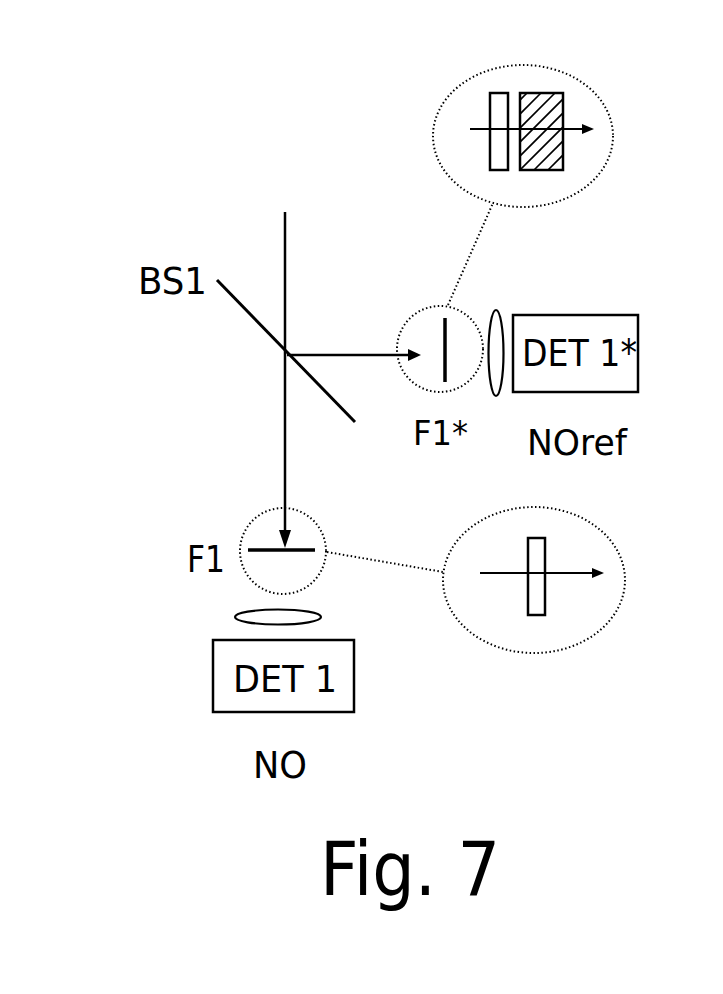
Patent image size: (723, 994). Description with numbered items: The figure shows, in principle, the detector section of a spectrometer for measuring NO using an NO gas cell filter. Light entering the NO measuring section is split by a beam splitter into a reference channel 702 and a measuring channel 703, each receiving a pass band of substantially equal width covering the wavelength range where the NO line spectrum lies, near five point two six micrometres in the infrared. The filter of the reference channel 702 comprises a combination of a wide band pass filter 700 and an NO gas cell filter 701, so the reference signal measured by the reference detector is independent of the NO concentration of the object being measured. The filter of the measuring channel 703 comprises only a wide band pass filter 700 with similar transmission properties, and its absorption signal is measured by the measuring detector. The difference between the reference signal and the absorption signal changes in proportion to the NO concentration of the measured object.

The wide band pass filter 700 is at (497, 113).
The NO gas cell filter 701 is at (543, 113).
The reference channel 702 is at (366, 356).
The measuring channel 703 is at (285, 442).